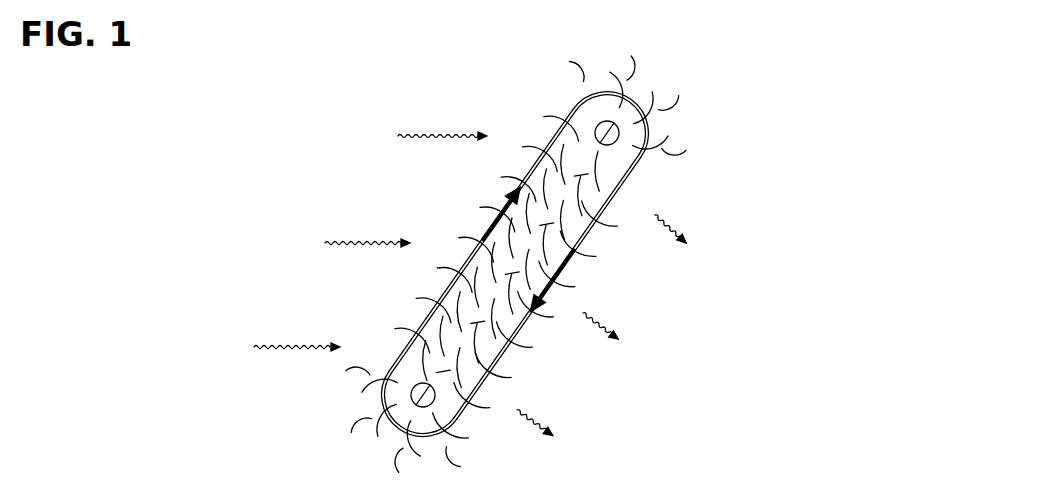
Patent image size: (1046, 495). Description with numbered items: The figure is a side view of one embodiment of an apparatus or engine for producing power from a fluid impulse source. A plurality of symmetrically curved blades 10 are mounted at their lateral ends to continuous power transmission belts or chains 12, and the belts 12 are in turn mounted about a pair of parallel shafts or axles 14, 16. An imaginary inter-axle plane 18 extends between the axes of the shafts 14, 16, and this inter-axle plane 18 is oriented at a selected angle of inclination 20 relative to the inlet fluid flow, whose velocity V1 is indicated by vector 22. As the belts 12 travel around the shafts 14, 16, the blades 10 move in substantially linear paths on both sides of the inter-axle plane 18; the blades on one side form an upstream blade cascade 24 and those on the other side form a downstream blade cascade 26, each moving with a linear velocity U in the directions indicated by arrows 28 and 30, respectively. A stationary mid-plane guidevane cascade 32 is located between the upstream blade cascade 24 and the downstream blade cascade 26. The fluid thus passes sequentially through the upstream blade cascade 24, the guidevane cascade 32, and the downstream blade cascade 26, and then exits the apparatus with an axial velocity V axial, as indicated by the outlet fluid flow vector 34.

The symmetrically curved blades 10 is at (588, 80).
The continuous power transmission belts or chains 12 is at (573, 100).
The shaft or axle 14 is at (401, 421).
The shaft or axle 16 is at (604, 140).
The inter-axle plane 18 is at (548, 155).
The angle of inclination 20 is at (461, 228).
The inlet fluid flow vector 22 is at (343, 230).
The upstream blade cascade 24 is at (374, 366).
The downstream blade cascade 26 is at (656, 153).
The arrow 28 is at (498, 192).
The arrow 30 is at (553, 310).
The stationary mid-plane guidevane cascade 32 is at (470, 302).
The outlet fluid flow vector 34 is at (673, 213).